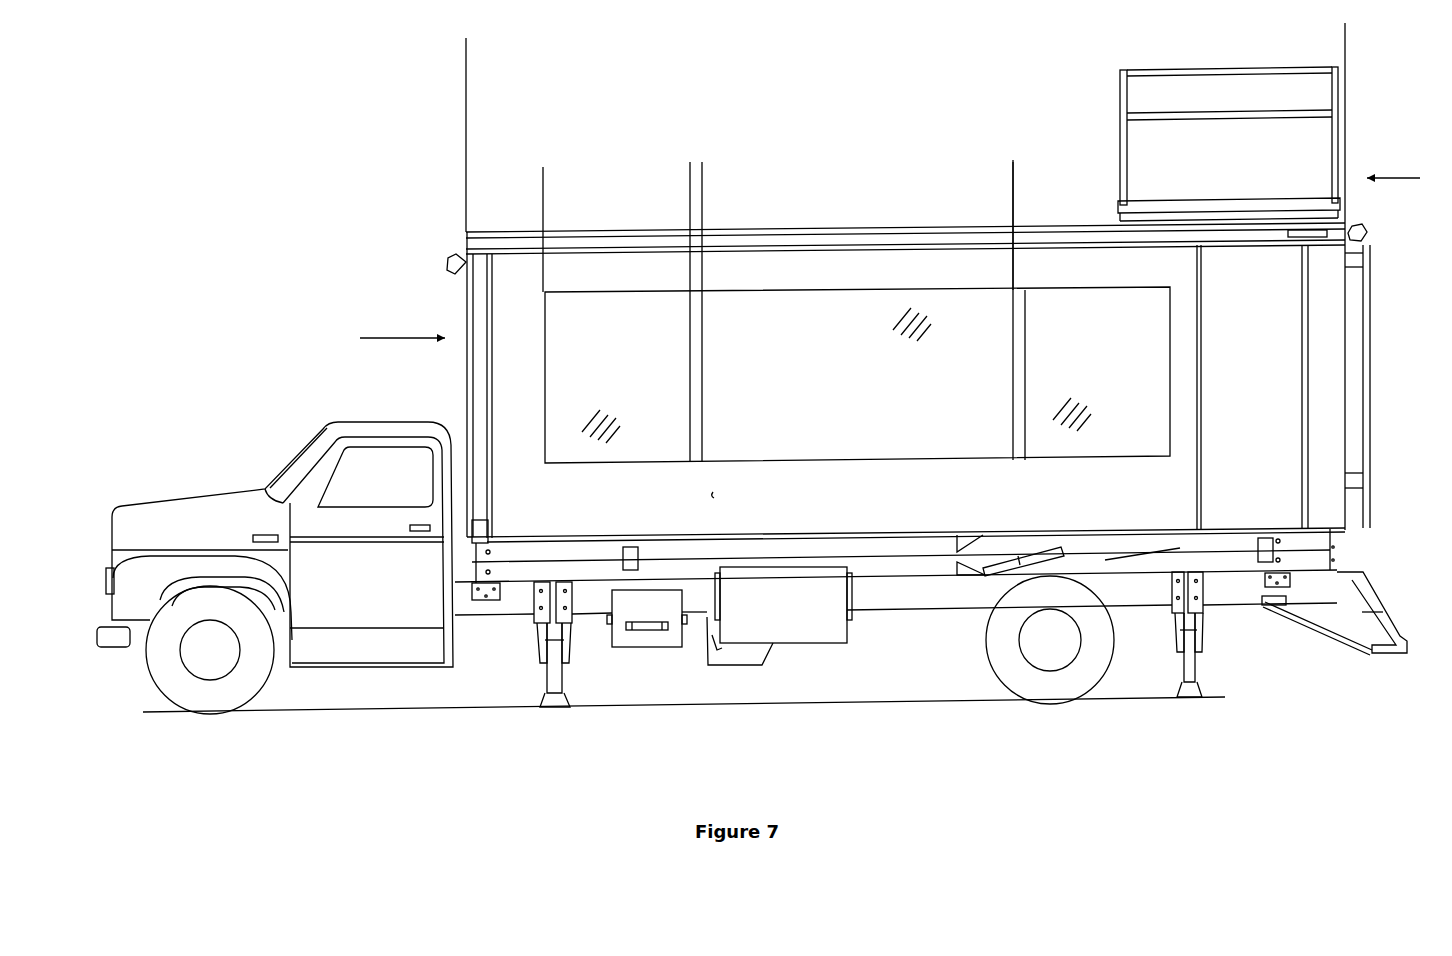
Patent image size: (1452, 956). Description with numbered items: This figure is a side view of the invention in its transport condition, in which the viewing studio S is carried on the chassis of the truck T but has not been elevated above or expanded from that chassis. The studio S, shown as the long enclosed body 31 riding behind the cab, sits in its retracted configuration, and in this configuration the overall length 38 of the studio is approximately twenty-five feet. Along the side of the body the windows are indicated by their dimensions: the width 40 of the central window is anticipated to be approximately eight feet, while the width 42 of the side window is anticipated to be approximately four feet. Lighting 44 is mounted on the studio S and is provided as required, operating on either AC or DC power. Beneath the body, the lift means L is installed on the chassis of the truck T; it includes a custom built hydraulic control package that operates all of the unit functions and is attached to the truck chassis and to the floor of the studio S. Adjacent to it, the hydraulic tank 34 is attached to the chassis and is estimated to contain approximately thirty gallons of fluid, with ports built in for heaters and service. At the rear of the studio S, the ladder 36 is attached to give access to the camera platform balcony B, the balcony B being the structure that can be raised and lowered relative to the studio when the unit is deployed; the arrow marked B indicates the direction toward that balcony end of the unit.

The mobile unit body 31 is at (916, 304).
The hydraulic tank 34 is at (809, 648).
The ladder 36 is at (1374, 349).
The overall body length 38 is at (1345, 38).
The width of central window 40 is at (702, 175).
The width of side window 42 is at (689, 178).
The lighting 44 is at (443, 251).
The truck T is at (386, 658).
The lift means L is at (649, 651).
The studio S is at (391, 338).
The balcony B is at (1402, 178).